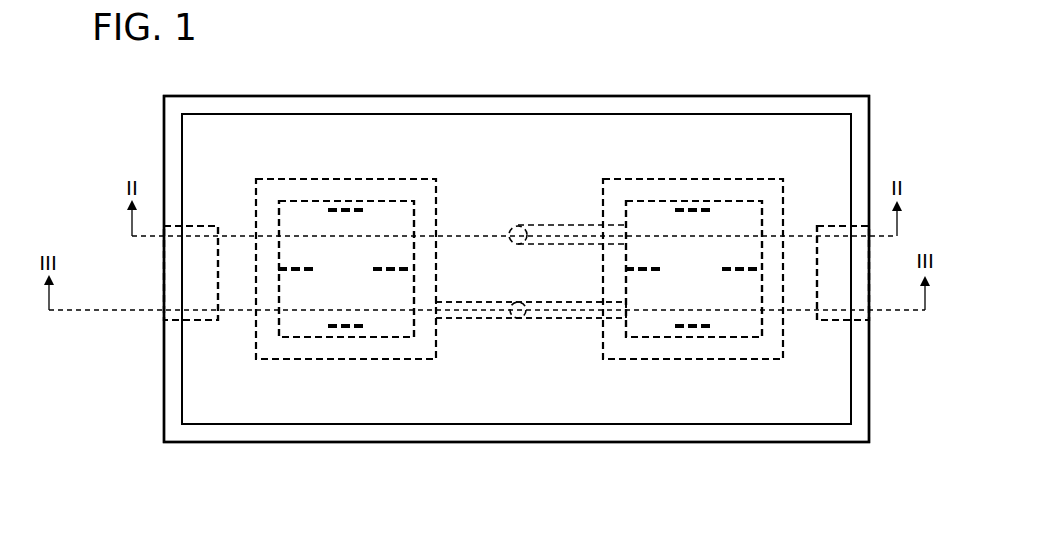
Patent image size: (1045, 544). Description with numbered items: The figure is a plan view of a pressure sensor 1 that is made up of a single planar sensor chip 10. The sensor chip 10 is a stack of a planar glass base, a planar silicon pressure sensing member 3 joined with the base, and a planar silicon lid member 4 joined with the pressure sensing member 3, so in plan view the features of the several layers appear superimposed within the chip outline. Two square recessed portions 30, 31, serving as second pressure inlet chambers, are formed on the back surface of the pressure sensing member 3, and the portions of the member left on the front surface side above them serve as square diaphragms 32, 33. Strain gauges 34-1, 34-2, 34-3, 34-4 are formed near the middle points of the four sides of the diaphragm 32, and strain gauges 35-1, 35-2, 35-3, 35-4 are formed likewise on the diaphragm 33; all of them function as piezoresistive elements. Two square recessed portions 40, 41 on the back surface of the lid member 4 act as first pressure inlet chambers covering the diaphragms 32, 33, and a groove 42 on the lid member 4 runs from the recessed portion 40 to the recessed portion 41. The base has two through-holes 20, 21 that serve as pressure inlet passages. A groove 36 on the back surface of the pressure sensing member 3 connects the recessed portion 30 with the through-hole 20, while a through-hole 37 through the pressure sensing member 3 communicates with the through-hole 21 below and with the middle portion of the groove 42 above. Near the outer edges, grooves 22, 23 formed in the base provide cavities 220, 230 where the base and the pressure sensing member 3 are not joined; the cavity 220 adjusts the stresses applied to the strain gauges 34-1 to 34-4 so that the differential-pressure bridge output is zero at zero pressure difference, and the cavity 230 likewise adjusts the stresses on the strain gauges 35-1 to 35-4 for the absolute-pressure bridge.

The pressure sensor 1 is at (487, 69).
The pressure sensing member 3 is at (870, 120).
The lid member 4 is at (182, 383).
The sensor chip 10 is at (182, 93).
The through-hole 20 is at (517, 227).
The through-hole 21 is at (520, 320).
The groove 22 is at (828, 318).
The groove 23 is at (192, 322).
The recessed portion 30 is at (762, 320).
The recessed portion 31 is at (295, 200).
The diaphragm 32 is at (697, 263).
The diaphragm 33 is at (338, 258).
The strain gauge 34-1 is at (705, 208).
The strain gauge 34-2 is at (727, 272).
The strain gauge 34-3 is at (635, 272).
The strain gauge 34-4 is at (695, 327).
The strain gauge 35-1 is at (333, 210).
The strain gauge 35-2 is at (395, 272).
The strain gauge 35-3 is at (293, 270).
The strain gauge 35-4 is at (335, 327).
The groove 36 is at (567, 225).
The through-hole 37 is at (520, 320).
The recessed portion 40 is at (673, 177).
The recessed portion 41 is at (390, 177).
The groove 42 is at (575, 320).
The cavity 220 is at (833, 253).
The cavity 230 is at (197, 263).